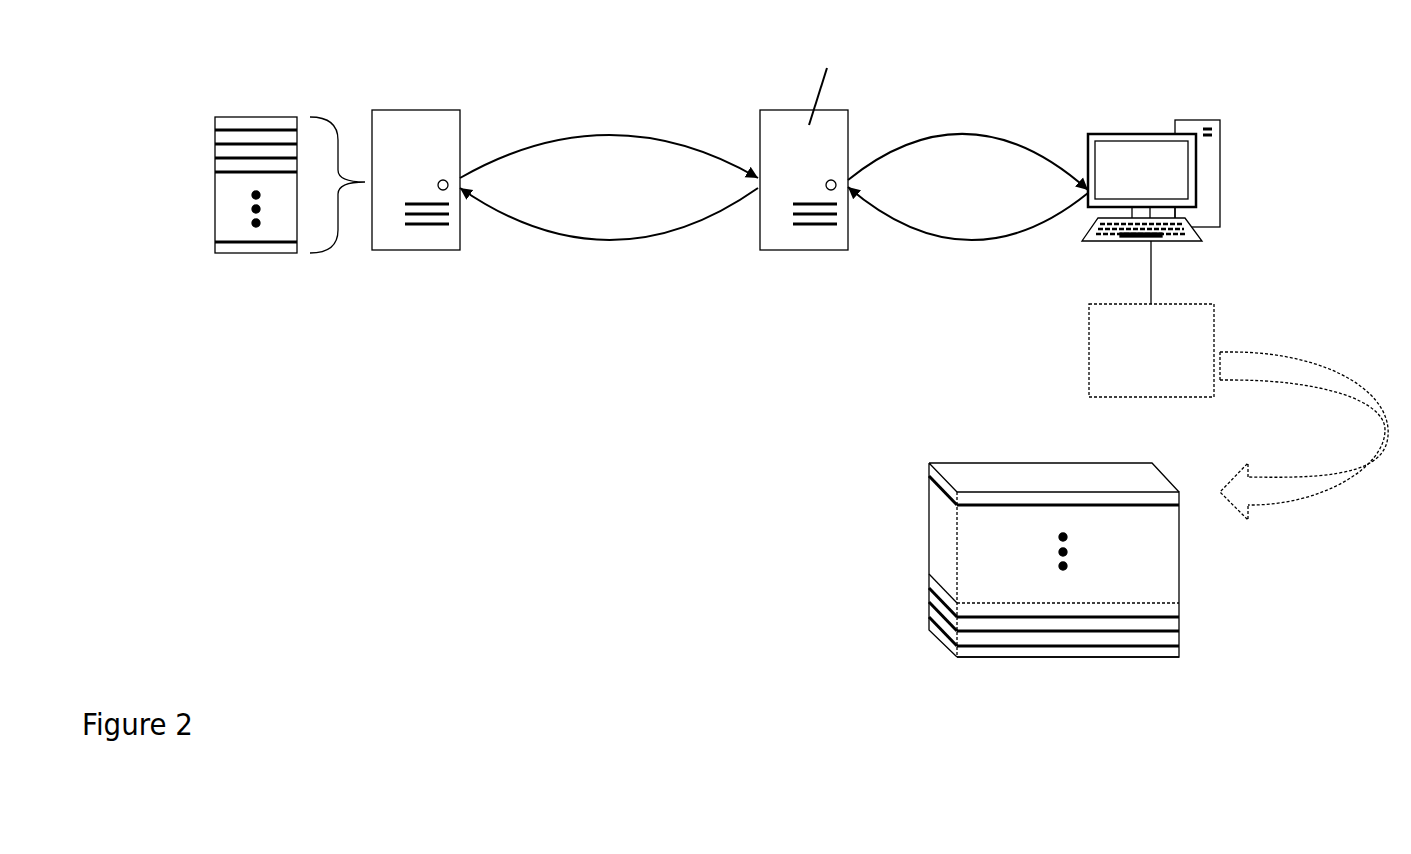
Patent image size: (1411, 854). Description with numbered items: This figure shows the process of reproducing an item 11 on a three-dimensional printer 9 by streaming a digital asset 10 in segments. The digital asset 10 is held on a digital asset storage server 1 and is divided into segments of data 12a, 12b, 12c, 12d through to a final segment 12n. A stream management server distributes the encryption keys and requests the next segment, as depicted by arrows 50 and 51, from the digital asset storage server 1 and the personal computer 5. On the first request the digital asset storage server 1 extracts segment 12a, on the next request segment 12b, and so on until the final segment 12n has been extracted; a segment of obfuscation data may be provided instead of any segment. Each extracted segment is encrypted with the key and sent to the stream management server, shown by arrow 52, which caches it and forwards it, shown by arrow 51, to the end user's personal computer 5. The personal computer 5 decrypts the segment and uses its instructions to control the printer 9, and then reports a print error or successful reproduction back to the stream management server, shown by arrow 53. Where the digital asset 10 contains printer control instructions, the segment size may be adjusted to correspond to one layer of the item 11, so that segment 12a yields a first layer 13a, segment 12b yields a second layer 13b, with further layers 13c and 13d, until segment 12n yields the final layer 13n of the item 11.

The digital asset storage server 1 is at (443, 142).
The personal computer 5 is at (1208, 160).
The 3D printer 9 is at (1192, 328).
The digital asset 10 is at (285, 235).
The item 11 is at (945, 538).
The segment of data 12a is at (228, 125).
The segment of data 12b is at (223, 137).
The segment of data 12c is at (218, 153).
The segment of data 12d is at (225, 166).
The segment of data 12n is at (223, 252).
The first layer 13a is at (993, 655).
The second layer 13b is at (938, 622).
The layer 13c is at (938, 608).
The layer 13d is at (938, 593).
The final layer 13n is at (968, 478).
The arrow 50 is at (609, 228).
The arrow 51 is at (968, 231).
The arrow 52 is at (609, 139).
The arrow 53 is at (968, 145).